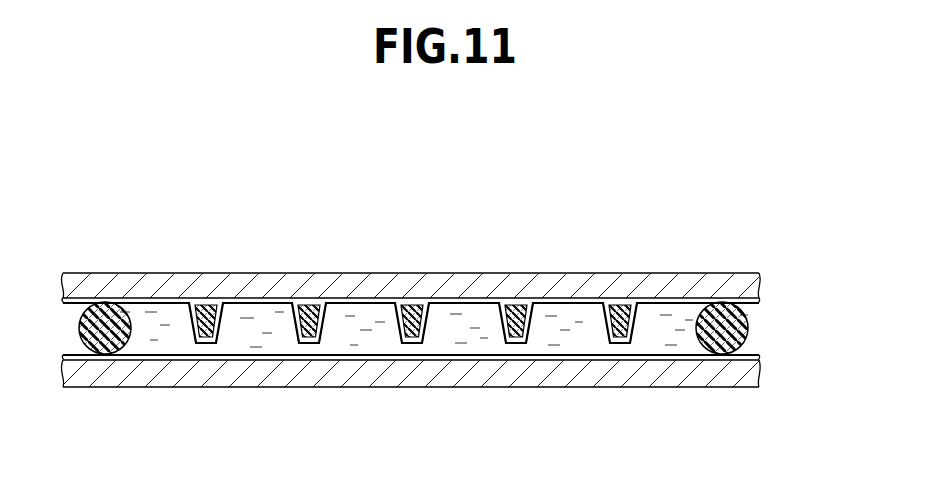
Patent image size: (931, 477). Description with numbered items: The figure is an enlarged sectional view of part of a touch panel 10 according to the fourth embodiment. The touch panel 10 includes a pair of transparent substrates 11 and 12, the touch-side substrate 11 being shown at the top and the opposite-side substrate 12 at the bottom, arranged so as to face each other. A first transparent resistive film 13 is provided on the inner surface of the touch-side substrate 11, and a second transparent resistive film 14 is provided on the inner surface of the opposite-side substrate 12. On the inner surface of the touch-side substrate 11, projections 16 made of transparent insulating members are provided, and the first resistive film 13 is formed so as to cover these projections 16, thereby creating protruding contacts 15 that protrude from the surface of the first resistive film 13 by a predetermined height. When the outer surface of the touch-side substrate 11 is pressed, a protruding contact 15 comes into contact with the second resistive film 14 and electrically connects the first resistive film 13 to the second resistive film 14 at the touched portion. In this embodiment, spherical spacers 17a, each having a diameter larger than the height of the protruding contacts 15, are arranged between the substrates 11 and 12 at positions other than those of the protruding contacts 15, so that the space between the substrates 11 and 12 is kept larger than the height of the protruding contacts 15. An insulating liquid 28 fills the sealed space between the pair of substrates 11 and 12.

The touch panel 10 is at (449, 301).
The touch-side substrate 11 is at (743, 289).
The opposite-side substrate 12 is at (743, 375).
The first transparent resistive film 13 is at (356, 301).
The second transparent resistive film 14 is at (414, 358).
The protruding contact 15 is at (206, 345).
The projection 16 is at (203, 306).
The spherical spacer 17a is at (98, 338).
The insulating liquid 28 is at (455, 318).